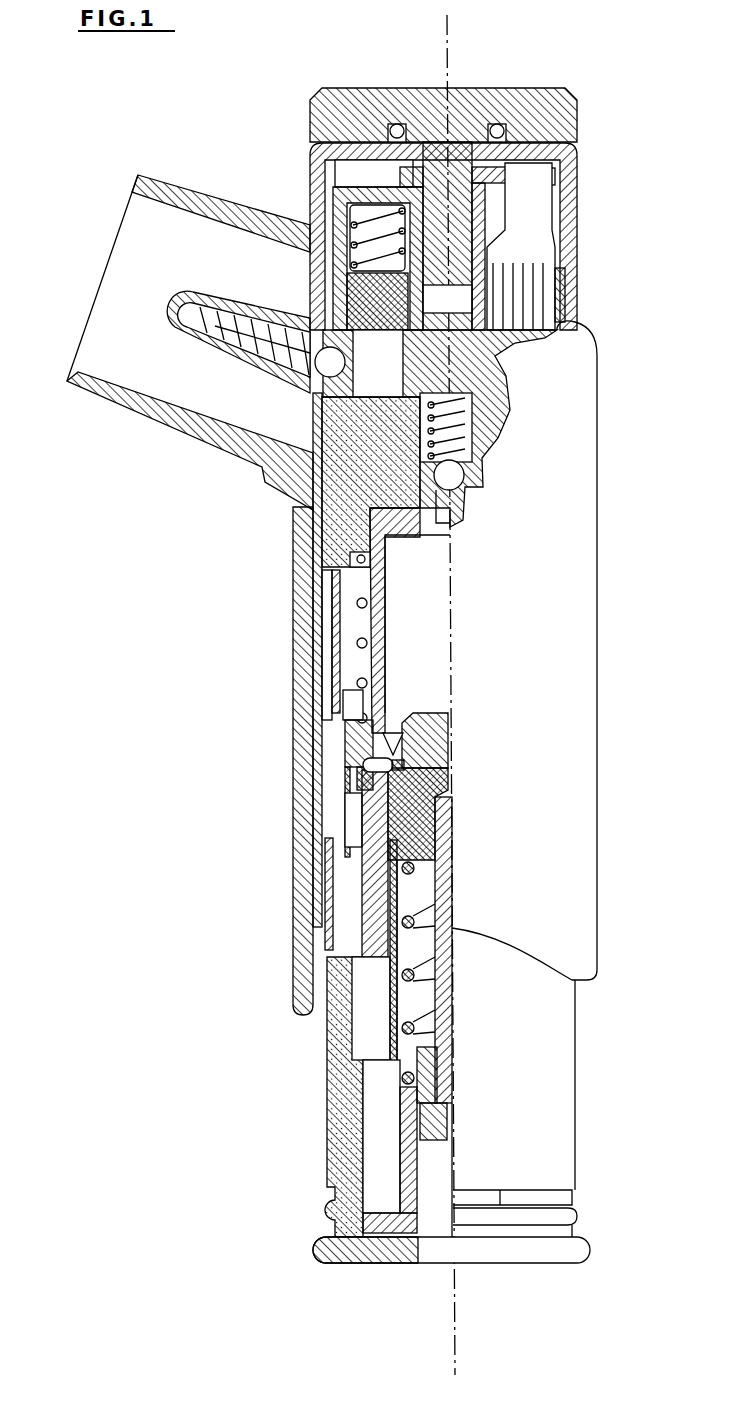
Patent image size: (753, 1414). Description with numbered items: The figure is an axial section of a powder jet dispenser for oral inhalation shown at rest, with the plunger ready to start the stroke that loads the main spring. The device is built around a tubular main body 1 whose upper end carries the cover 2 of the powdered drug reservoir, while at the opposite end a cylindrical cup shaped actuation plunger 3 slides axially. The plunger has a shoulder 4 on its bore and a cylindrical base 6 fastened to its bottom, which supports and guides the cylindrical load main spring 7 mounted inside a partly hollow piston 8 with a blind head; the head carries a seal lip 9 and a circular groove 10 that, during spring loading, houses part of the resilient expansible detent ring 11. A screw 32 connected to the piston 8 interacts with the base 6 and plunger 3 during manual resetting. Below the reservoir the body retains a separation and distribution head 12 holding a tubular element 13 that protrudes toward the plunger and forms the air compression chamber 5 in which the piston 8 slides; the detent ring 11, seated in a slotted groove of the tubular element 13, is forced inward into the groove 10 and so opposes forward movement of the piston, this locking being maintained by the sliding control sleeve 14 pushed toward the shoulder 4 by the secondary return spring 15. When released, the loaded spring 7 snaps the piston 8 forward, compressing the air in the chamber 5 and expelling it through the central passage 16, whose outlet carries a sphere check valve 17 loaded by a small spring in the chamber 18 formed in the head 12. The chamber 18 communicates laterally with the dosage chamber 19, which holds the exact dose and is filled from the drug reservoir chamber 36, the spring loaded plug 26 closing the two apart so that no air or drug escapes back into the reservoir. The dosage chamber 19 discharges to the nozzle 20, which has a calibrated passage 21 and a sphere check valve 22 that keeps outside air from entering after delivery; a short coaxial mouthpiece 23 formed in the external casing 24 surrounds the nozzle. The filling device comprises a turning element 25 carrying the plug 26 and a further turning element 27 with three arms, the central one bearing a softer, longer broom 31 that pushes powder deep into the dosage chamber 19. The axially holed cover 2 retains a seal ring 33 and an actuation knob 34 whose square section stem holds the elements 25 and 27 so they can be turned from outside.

The tubular main body 1 is at (312, 454).
The cover 2 is at (578, 153).
The cylindrical cup shaped actuation plunger 3 is at (368, 1250).
The shoulder 4 is at (345, 948).
The air compression chamber 5 is at (428, 663).
The cylindrical base 6 is at (415, 1225).
The cylindrical load main spring 7 is at (425, 912).
The partly hollow piston 8 is at (410, 835).
The seal lip 9 is at (405, 742).
The circular groove 10 is at (397, 767).
The resilient expansible detent ring 11 is at (362, 768).
The head 12 is at (350, 503).
The tubular element 13 is at (372, 628).
The sliding control sleeve 14 is at (342, 808).
The secondary return spring 15 is at (360, 680).
The central passage 16 is at (442, 510).
The sphere check valve 17 is at (455, 475).
The chamber 18 is at (445, 412).
The dosage chamber 19 is at (395, 357).
The nozzle 20 is at (188, 297).
The calibrated passage 21 is at (200, 310).
The sphere check valve 22 is at (322, 348).
The mouthpiece 23 is at (204, 192).
The external casing 24 is at (580, 466).
The turning element 25 is at (340, 160).
The spring loaded plug 26 is at (320, 213).
The further turning element 27 is at (562, 178).
The broom 31 is at (538, 245).
The screw 32 is at (440, 1120).
The seal ring 33 is at (397, 124).
The actuation knob 34 is at (340, 108).
The drug reservoir chamber 36 is at (560, 225).